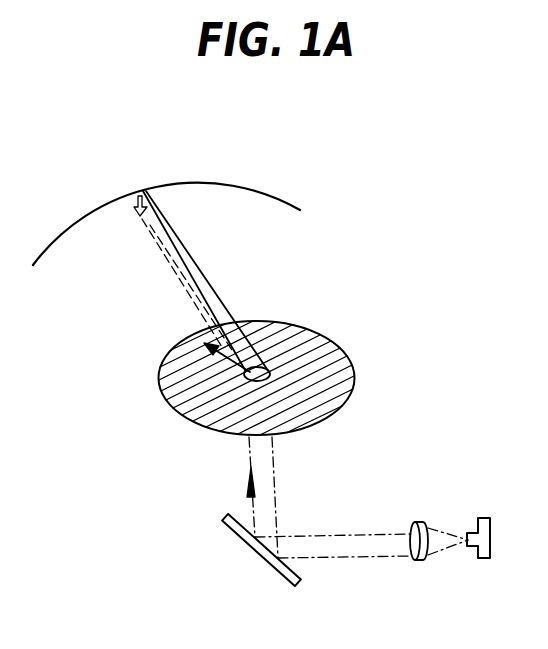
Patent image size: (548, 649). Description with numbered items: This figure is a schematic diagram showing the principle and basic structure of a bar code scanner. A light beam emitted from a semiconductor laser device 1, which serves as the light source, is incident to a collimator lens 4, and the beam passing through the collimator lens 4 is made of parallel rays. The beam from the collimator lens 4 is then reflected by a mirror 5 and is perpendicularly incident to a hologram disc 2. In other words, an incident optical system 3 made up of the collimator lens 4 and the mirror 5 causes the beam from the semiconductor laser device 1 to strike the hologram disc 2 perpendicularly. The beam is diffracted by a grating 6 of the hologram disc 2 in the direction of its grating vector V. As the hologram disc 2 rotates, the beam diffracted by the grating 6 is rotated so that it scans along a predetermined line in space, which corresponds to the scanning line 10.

The semiconductor laser device 1 is at (484, 559).
The hologram disc 2 is at (345, 348).
The incident optical system 3 is at (378, 502).
The collimator lens 4 is at (425, 561).
The mirror 5 is at (263, 557).
The grating 6 is at (275, 328).
The scanning line 10 is at (102, 200).
The grating vector V is at (207, 362).